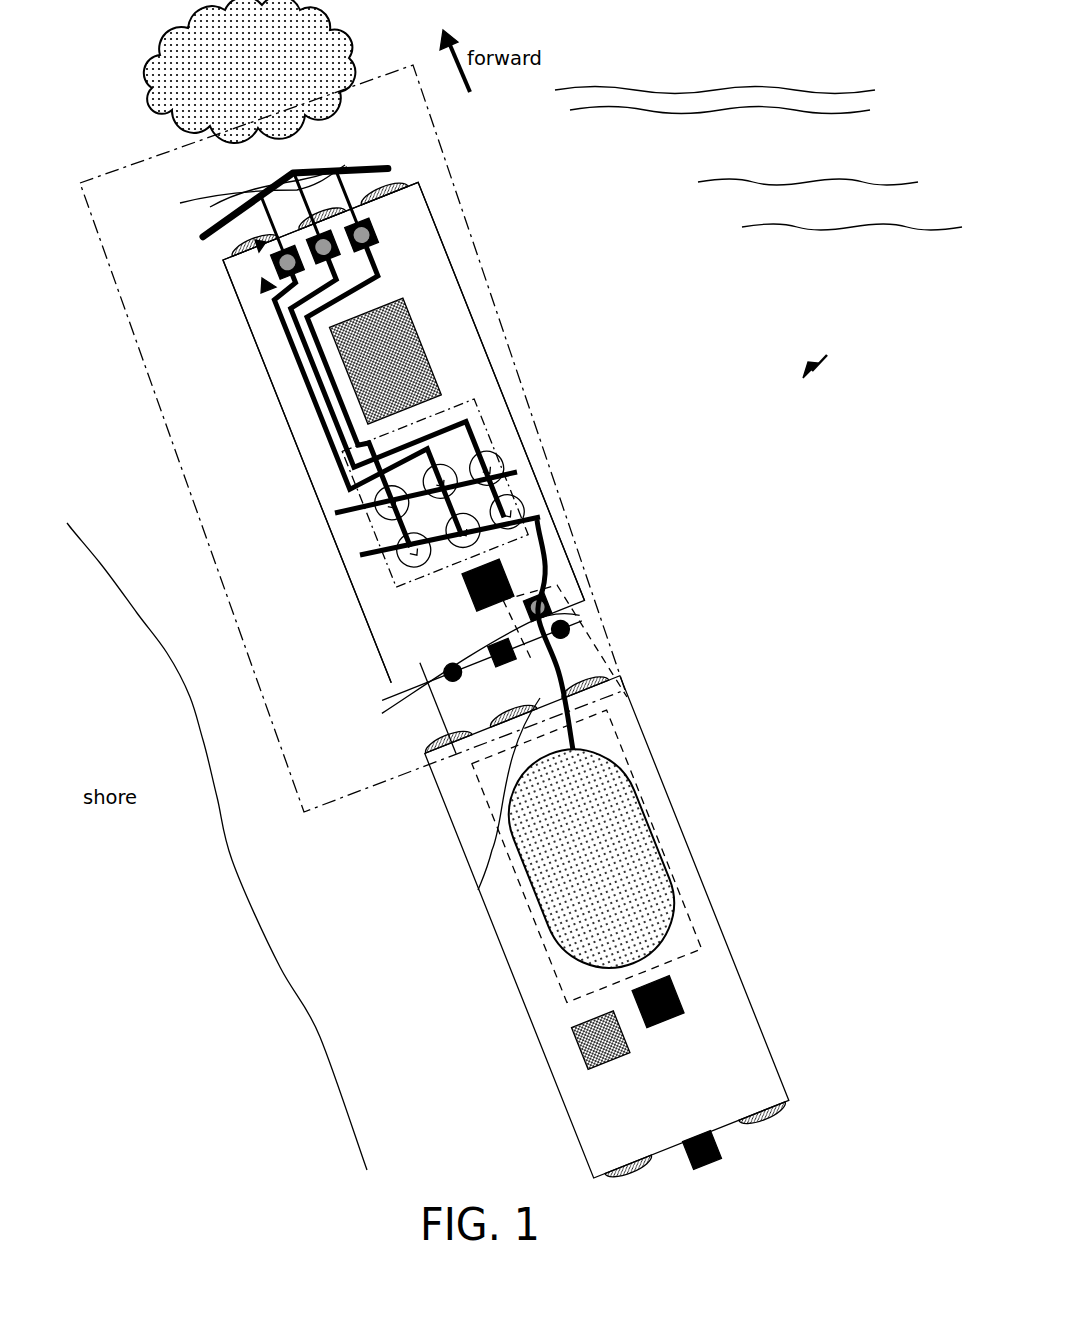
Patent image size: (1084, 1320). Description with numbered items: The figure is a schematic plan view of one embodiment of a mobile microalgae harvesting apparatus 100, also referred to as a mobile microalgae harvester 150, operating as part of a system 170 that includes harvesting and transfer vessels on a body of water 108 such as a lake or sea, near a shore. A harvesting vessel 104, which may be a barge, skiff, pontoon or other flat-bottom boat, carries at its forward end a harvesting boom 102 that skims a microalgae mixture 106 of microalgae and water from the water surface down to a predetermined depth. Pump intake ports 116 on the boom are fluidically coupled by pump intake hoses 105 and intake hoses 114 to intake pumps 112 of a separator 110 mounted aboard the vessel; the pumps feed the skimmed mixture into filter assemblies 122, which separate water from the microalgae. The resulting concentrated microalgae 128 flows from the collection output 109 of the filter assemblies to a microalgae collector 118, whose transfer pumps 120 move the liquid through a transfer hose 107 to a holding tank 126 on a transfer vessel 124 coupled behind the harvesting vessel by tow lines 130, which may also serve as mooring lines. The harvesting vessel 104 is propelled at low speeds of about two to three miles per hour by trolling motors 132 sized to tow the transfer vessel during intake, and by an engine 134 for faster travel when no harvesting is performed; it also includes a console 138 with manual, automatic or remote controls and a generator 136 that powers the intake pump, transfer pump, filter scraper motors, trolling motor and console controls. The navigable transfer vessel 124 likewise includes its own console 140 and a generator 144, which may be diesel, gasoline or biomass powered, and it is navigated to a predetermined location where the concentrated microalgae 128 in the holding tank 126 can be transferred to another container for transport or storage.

The mobile microalgae harvesting apparatus 100 is at (194, 510).
The harvesting boom 102 is at (340, 170).
The harvesting vessel 104 is at (472, 318).
The pump intake hoses 105 is at (227, 200).
The microalgae mixture 106 is at (148, 88).
The transfer hose 107 is at (520, 635).
The body of water 108 is at (758, 142).
The collection output 109 is at (597, 538).
The separator 110 is at (330, 479).
The intake pumps 112 is at (195, 257).
The intake hoses 114 is at (264, 285).
The pump intake ports 116 is at (355, 548).
The microalgae collector 118 is at (517, 880).
The transfer pumps 120 is at (555, 605).
The filter assemblies 122 is at (512, 462).
The transfer vessel 124 is at (668, 797).
The holding tank 126 is at (647, 827).
The concentrated microalgae 128 is at (593, 872).
The tow lines 130 is at (440, 736).
The trolling motors 132 is at (453, 672).
The engine 134 is at (493, 663).
The generator 136 is at (410, 350).
The console 138 is at (470, 592).
The console 140 is at (683, 1010).
The generator 144 is at (592, 1047).
The mobile microalgae harvester 150 is at (421, 474).
The system 170 is at (843, 319).